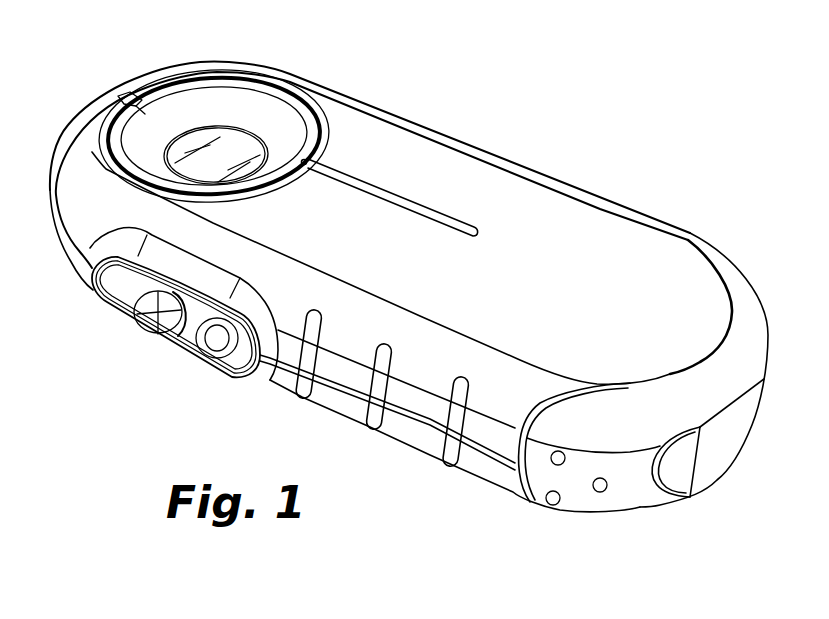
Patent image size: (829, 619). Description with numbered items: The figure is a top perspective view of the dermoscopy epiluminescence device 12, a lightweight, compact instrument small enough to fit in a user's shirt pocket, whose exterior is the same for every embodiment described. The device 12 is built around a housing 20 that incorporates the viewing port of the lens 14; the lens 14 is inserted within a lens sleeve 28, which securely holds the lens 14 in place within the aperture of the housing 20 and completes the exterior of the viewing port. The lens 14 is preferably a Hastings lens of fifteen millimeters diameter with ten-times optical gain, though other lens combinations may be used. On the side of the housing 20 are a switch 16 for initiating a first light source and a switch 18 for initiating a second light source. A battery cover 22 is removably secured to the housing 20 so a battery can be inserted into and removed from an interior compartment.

The dermoscopy epiluminescence device 12 is at (561, 102).
The lens 14 is at (233, 140).
The switch 16 is at (130, 312).
The switch 18 is at (222, 358).
The housing 20 is at (612, 227).
The battery cover 22 is at (627, 493).
The lens sleeve 28 is at (259, 103).